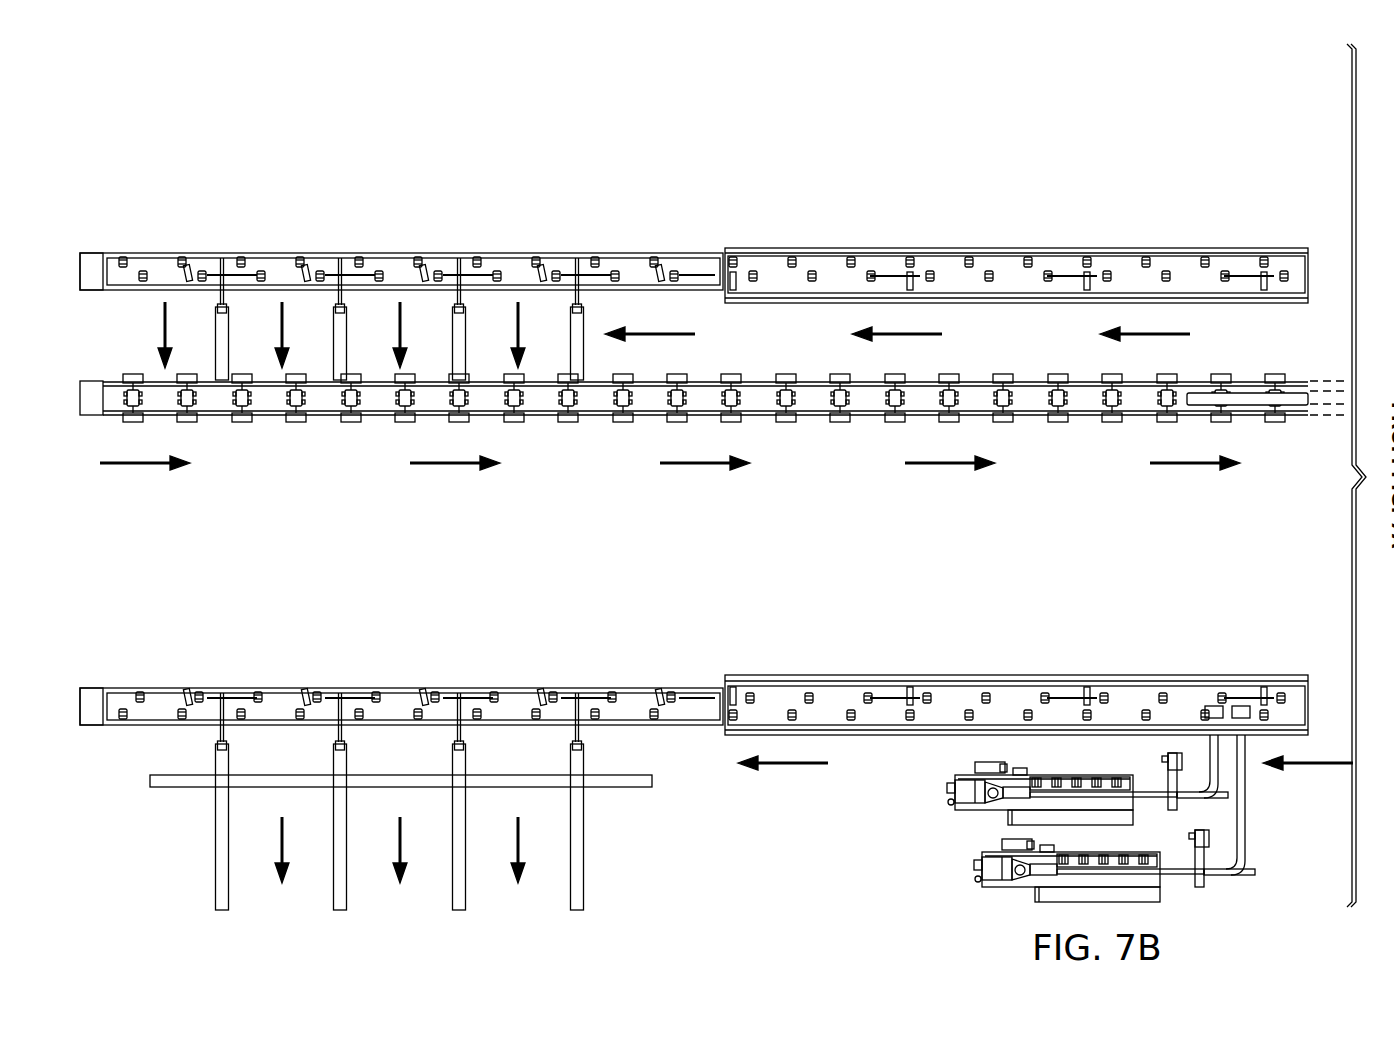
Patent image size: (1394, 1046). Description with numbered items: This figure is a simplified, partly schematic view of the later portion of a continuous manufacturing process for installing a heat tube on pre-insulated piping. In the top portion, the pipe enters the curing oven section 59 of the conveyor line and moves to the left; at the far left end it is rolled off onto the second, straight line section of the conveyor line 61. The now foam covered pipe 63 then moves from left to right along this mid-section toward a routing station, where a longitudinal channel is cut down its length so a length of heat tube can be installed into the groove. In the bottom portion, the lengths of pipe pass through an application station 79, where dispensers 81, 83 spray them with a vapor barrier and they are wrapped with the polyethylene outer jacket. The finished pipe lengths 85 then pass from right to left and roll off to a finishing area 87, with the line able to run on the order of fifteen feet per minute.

The curing oven section 59 is at (1127, 265).
The conveyor line 61 is at (331, 420).
The foam covered pipe 63 is at (1246, 398).
The application station 79 is at (1236, 688).
The dispenser 81 is at (963, 777).
The dispenser 83 is at (990, 852).
The finished pipe lengths 85 is at (187, 787).
The finishing area 87 is at (640, 850).